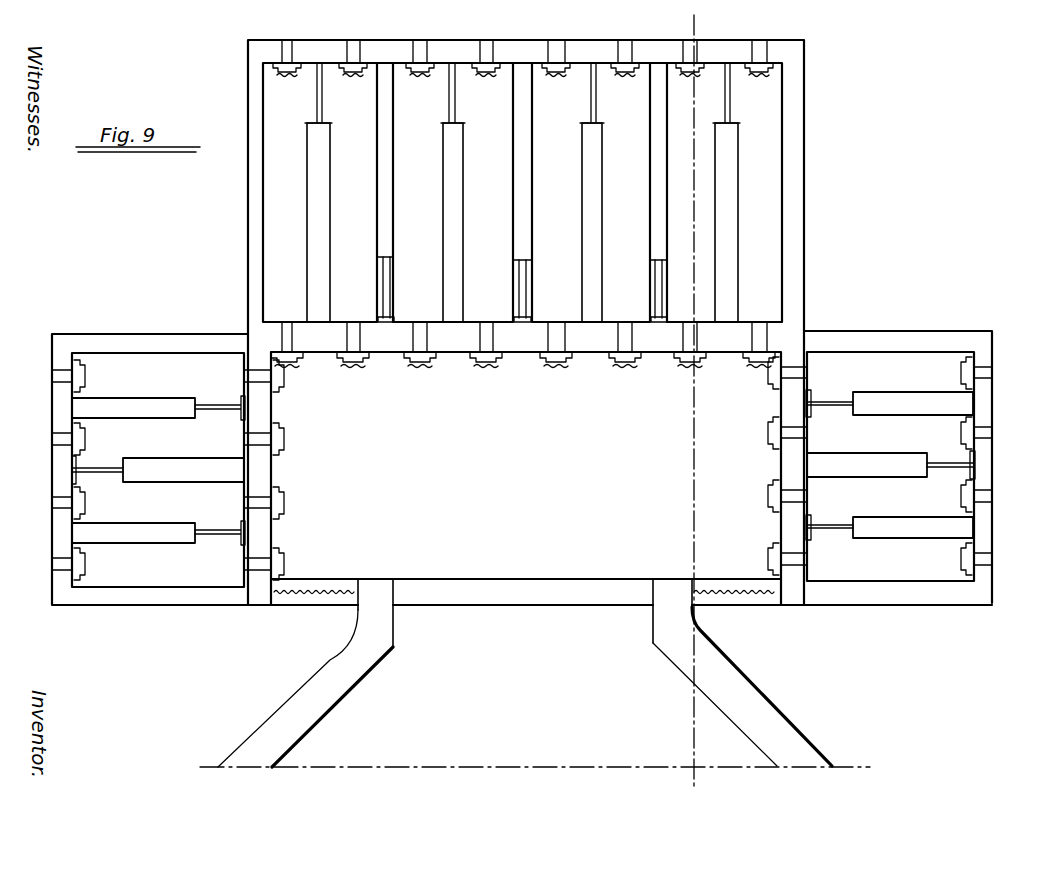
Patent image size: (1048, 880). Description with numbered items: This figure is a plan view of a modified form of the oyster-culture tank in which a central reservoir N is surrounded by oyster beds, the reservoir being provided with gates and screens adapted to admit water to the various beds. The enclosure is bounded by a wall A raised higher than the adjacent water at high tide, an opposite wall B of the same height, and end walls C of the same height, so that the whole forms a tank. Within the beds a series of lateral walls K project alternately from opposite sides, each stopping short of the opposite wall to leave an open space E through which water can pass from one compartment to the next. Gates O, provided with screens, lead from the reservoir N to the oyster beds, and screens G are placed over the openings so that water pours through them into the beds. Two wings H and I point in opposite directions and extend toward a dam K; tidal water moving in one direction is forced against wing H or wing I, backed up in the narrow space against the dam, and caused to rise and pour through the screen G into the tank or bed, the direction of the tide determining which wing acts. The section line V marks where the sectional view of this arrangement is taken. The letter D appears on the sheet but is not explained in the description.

The wall A is at (466, 52).
The wall B is at (268, 406).
The end walls C is at (246, 292).
The pistons D is at (444, 152).
The open space E is at (344, 100).
The screens G is at (494, 74).
The wing H is at (747, 683).
The wing I is at (336, 652).
The lateral walls K is at (380, 584).
The central reservoir N is at (526, 478).
The gates O is at (348, 62).
The section line V is at (700, 406).